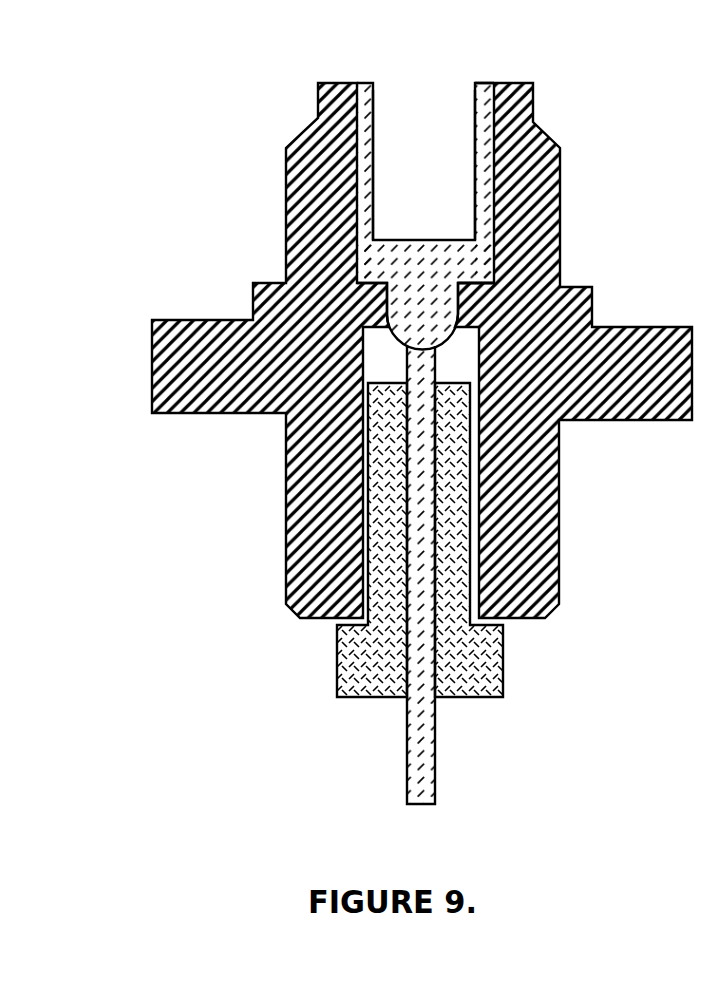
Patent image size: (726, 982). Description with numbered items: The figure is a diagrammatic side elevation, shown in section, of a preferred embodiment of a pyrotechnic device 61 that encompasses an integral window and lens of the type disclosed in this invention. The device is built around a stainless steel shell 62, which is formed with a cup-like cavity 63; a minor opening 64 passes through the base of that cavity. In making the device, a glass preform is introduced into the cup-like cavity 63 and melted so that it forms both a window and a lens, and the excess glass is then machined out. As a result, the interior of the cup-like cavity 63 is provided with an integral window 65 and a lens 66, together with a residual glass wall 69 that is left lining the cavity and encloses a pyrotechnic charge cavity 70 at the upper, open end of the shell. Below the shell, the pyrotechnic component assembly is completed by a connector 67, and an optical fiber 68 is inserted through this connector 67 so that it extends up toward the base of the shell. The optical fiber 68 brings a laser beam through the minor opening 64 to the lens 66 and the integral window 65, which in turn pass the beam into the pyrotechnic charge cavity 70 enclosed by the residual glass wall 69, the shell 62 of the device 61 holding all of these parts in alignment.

The pyrotechnic device 61 is at (363, 411).
The stainless steel shell 62 is at (538, 131).
The cup-like cavity 63 is at (368, 82).
The minor opening 64 is at (420, 243).
The integral window 65 is at (497, 248).
The lens 66 is at (387, 315).
The connector 67 is at (503, 671).
The optical fiber 68 is at (428, 793).
The residual glass wall 69 is at (376, 133).
The pyrotechnic charge cavity 70 is at (424, 165).